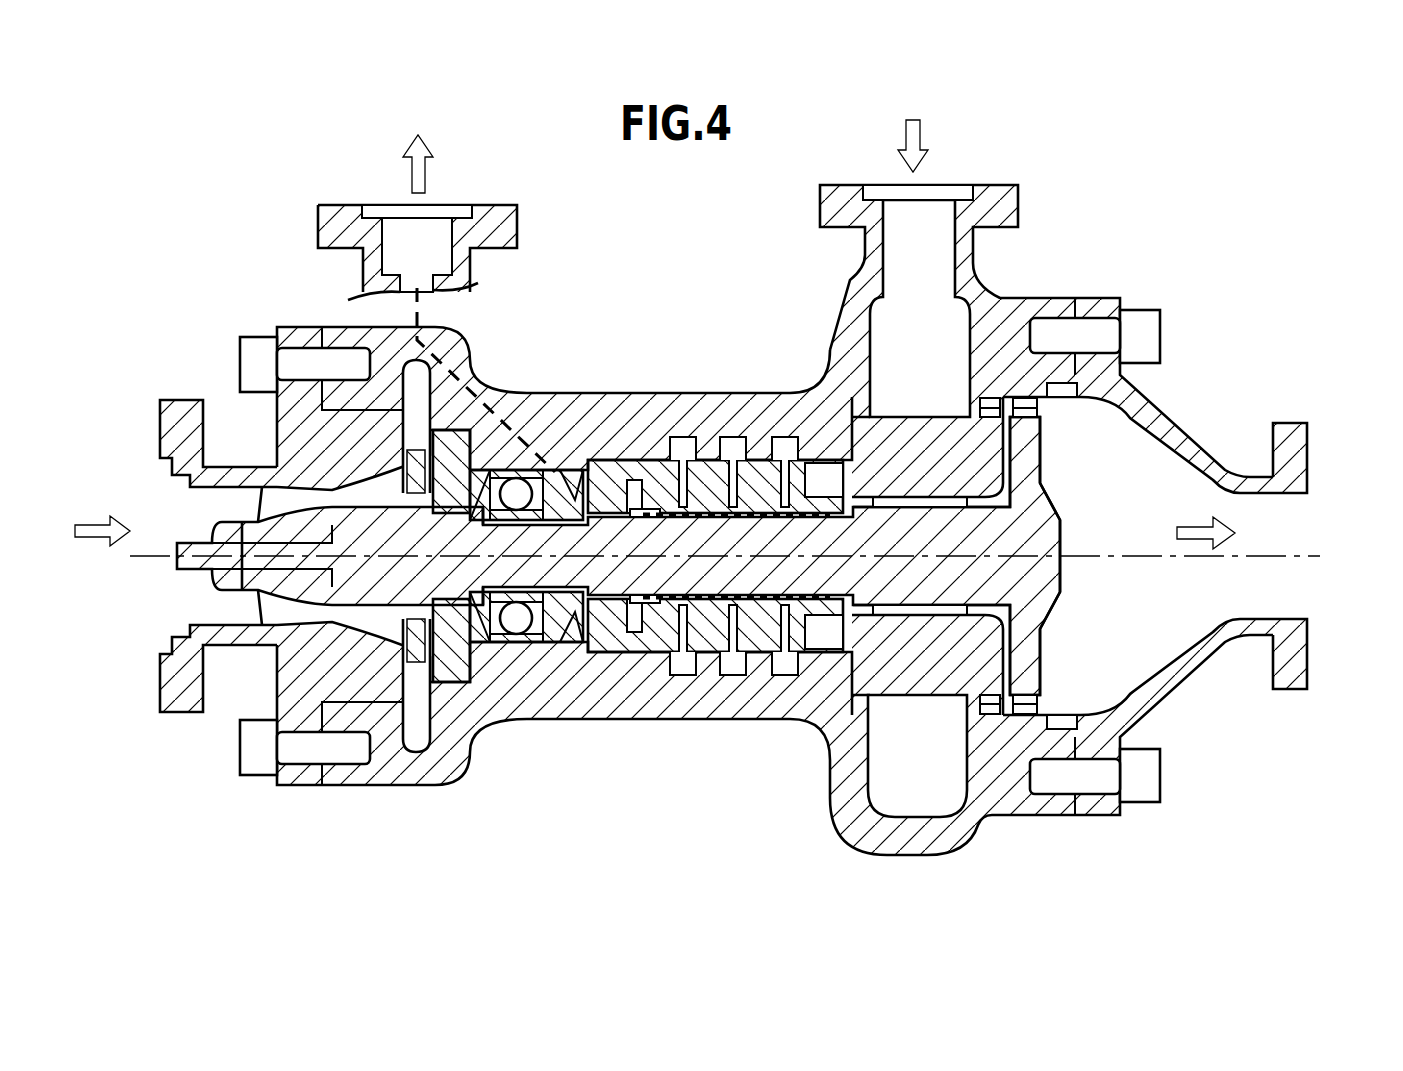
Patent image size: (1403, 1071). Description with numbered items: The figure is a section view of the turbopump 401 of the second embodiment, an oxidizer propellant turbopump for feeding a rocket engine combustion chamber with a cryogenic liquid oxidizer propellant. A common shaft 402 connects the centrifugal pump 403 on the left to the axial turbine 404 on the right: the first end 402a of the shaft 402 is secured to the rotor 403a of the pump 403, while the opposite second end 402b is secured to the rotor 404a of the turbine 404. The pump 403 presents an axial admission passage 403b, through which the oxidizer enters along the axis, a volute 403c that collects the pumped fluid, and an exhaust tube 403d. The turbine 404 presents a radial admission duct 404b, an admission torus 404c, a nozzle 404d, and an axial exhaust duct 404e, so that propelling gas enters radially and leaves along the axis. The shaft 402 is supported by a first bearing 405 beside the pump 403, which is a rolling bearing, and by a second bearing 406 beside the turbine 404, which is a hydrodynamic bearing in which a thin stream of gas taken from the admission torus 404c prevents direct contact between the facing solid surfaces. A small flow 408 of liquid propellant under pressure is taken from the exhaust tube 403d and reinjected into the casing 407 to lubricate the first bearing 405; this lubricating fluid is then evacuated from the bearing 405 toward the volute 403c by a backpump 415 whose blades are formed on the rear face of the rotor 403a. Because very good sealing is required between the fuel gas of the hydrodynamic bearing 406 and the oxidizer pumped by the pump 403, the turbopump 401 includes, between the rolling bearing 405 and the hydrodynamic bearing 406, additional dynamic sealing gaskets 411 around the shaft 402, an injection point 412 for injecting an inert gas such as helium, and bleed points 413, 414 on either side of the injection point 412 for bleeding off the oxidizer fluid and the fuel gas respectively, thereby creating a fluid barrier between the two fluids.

The turbopump 401 is at (192, 773).
The shaft 402 is at (617, 580).
The first end of the shaft 402a is at (430, 575).
The second end of the shaft 402b is at (960, 572).
The centrifugal pump 403 is at (305, 420).
The rotor of the pump 403a is at (468, 372).
The axial admission passage 403b is at (192, 507).
The volute 403c is at (415, 752).
The exhaust tube 403d is at (432, 243).
The axial turbine 404 is at (1017, 317).
The rotor of the turbine 404a is at (1043, 408).
The radial admission duct 404b is at (935, 225).
The admission torus 404c is at (932, 803).
The nozzle 404d is at (975, 407).
The axial exhaust duct 404e is at (1272, 525).
The first bearing 405 is at (530, 450).
The second bearing 406 is at (930, 618).
The casing 407 is at (655, 410).
The small flow of liquid propellant 408 is at (425, 318).
The dynamic sealing gaskets 411 is at (650, 522).
The injection point 412 is at (722, 596).
The bleed point 413 is at (683, 670).
The bleed point 414 is at (785, 670).
The backpump 415 is at (455, 700).